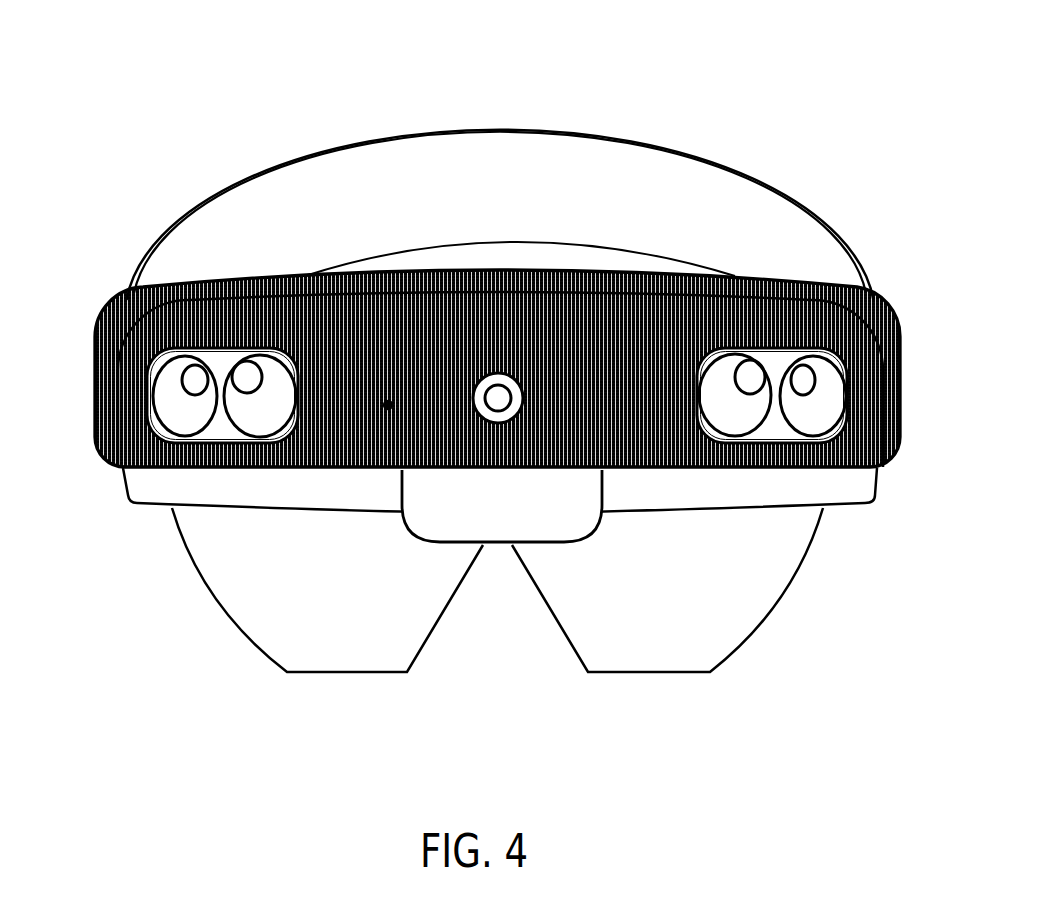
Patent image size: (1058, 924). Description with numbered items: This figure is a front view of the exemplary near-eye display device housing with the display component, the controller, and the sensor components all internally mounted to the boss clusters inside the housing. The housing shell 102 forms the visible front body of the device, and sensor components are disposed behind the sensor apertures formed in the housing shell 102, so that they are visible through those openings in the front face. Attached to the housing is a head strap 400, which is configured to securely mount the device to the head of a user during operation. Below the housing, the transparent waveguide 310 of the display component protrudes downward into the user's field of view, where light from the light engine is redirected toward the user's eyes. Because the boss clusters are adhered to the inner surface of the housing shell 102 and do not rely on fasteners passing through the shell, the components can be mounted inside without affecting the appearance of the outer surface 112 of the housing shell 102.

The head strap 400 is at (627, 147).
The housing shell 102 is at (900, 445).
The outer surface 112 is at (385, 408).
The transparent waveguide 310 is at (738, 593).